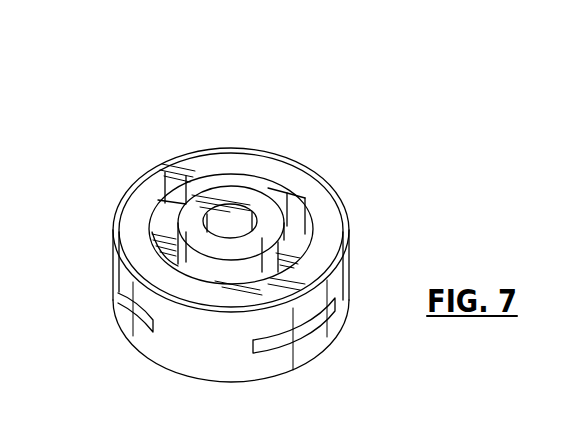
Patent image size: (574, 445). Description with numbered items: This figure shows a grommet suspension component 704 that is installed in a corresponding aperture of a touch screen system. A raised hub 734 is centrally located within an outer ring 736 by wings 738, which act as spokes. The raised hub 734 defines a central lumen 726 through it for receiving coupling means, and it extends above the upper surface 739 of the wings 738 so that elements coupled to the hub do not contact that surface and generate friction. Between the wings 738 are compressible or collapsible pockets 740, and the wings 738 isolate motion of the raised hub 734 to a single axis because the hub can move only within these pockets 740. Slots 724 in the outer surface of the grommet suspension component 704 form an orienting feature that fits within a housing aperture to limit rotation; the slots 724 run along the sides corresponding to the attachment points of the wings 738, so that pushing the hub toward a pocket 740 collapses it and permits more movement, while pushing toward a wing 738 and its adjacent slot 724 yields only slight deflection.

The grommet suspension component 704 is at (327, 129).
The slots 724 is at (288, 339).
The central lumen 726 is at (321, 211).
The raised hub 734 is at (218, 197).
The outer ring 736 is at (337, 207).
The wings 738 is at (160, 233).
The upper surface 739 is at (172, 206).
The pockets 740 is at (266, 187).